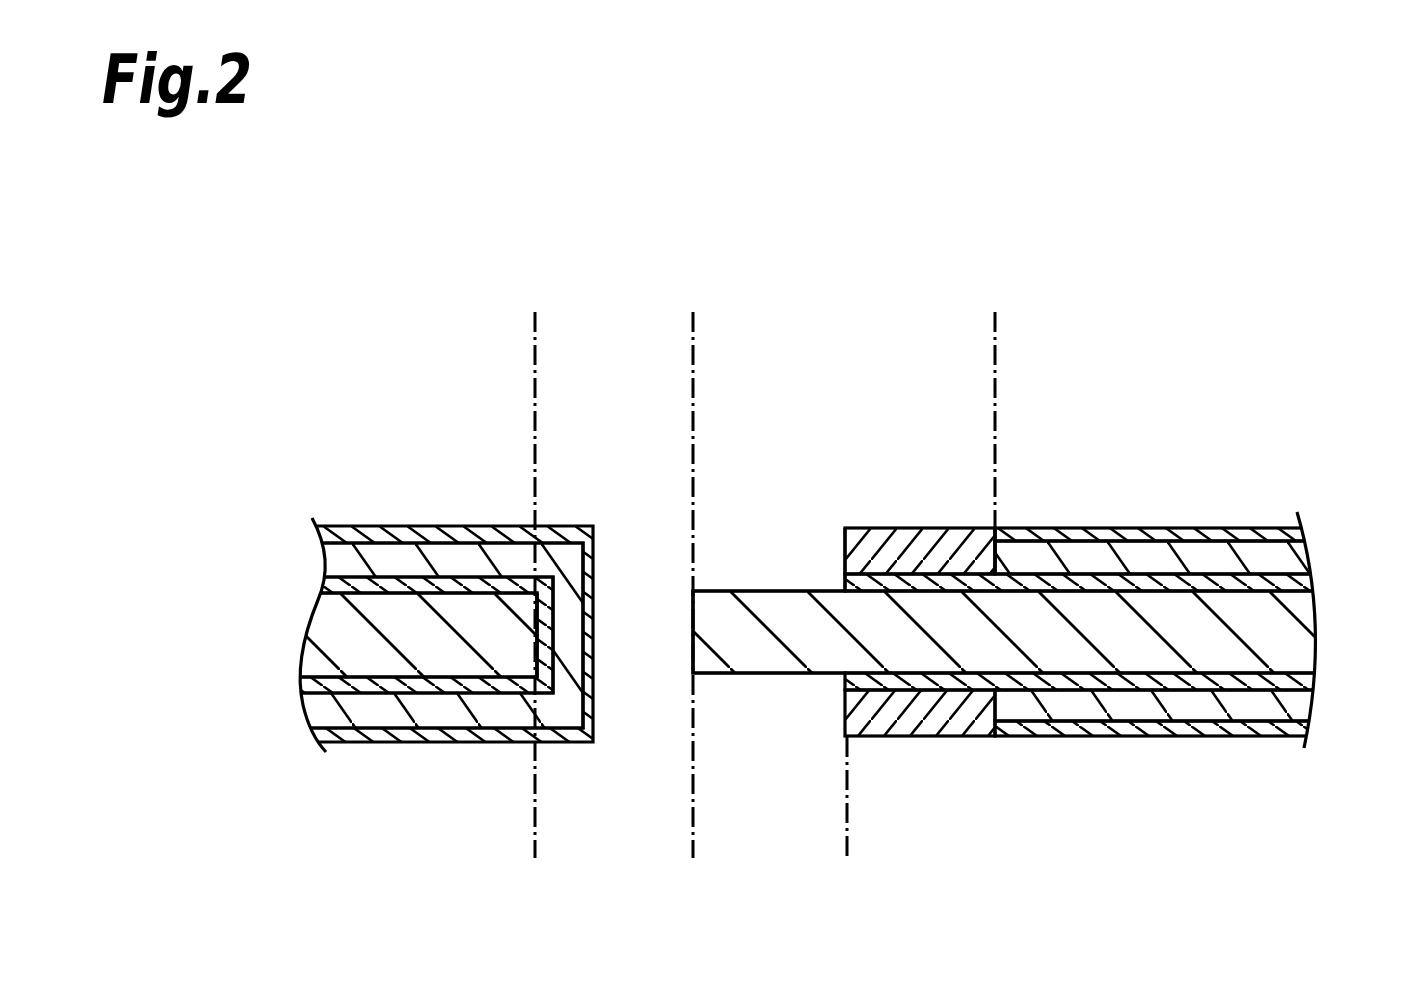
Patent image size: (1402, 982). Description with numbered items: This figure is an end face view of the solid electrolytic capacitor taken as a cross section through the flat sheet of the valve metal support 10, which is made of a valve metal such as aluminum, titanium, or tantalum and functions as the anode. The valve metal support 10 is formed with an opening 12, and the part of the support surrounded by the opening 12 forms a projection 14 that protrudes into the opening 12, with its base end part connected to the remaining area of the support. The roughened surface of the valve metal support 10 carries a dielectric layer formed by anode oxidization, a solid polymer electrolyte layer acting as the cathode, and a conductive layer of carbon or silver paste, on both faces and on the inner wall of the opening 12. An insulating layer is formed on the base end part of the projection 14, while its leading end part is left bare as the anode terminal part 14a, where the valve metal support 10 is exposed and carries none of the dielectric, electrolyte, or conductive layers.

The valve metal support 10 is at (1283, 640).
The opening 12 is at (692, 318).
The projection 14 is at (995, 318).
The anode terminal part 14a is at (847, 845).